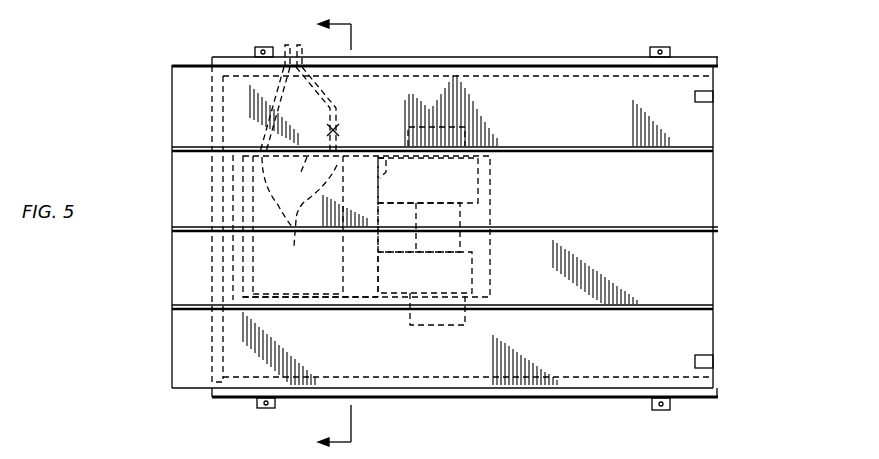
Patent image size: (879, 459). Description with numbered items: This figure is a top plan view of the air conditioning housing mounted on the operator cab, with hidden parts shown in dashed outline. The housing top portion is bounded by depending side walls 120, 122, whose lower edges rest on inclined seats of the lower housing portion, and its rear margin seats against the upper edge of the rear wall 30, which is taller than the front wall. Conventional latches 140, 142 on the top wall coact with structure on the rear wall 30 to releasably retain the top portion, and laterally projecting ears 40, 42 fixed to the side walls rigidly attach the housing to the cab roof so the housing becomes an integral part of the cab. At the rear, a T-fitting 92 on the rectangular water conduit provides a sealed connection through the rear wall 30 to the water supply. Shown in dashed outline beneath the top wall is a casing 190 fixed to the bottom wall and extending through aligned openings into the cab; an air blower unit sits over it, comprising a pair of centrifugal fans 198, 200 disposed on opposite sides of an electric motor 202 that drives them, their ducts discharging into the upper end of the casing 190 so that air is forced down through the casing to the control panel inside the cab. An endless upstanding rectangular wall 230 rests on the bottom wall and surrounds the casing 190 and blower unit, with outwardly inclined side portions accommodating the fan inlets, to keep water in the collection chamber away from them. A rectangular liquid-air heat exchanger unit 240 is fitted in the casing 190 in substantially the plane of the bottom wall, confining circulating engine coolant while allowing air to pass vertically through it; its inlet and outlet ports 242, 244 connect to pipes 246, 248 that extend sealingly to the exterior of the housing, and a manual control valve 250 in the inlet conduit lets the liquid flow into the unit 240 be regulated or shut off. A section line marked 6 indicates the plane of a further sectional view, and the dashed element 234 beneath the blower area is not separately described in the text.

The rear wall 30 is at (714, 198).
The T-fitting 92 is at (714, 229).
The depending side wall 122 is at (452, 68).
The depending side wall 120 is at (452, 390).
The pipe 248 is at (246, 55).
The pipe 246 is at (352, 87).
The section line 6- 6 is at (336, 229).
The latch 140 is at (714, 97).
The latch 142 is at (714, 357).
The laterally projecting ear 40 is at (267, 410).
The laterally projecting ear 42 is at (665, 411).
The casing 190 is at (380, 143).
The inlet port 242 is at (319, 226).
The centrifugal fan 198 is at (462, 190).
The electric motor 202 is at (466, 224).
The centrifugal fan 200 is at (462, 271).
The lower housing extension 234 is at (463, 323).
The endless upstanding rectangular wall 230 is at (243, 196).
The outlet port 244 is at (275, 192).
The manual control valve 250 is at (312, 201).
The liquid-air heat exchanger unit 240 is at (304, 311).